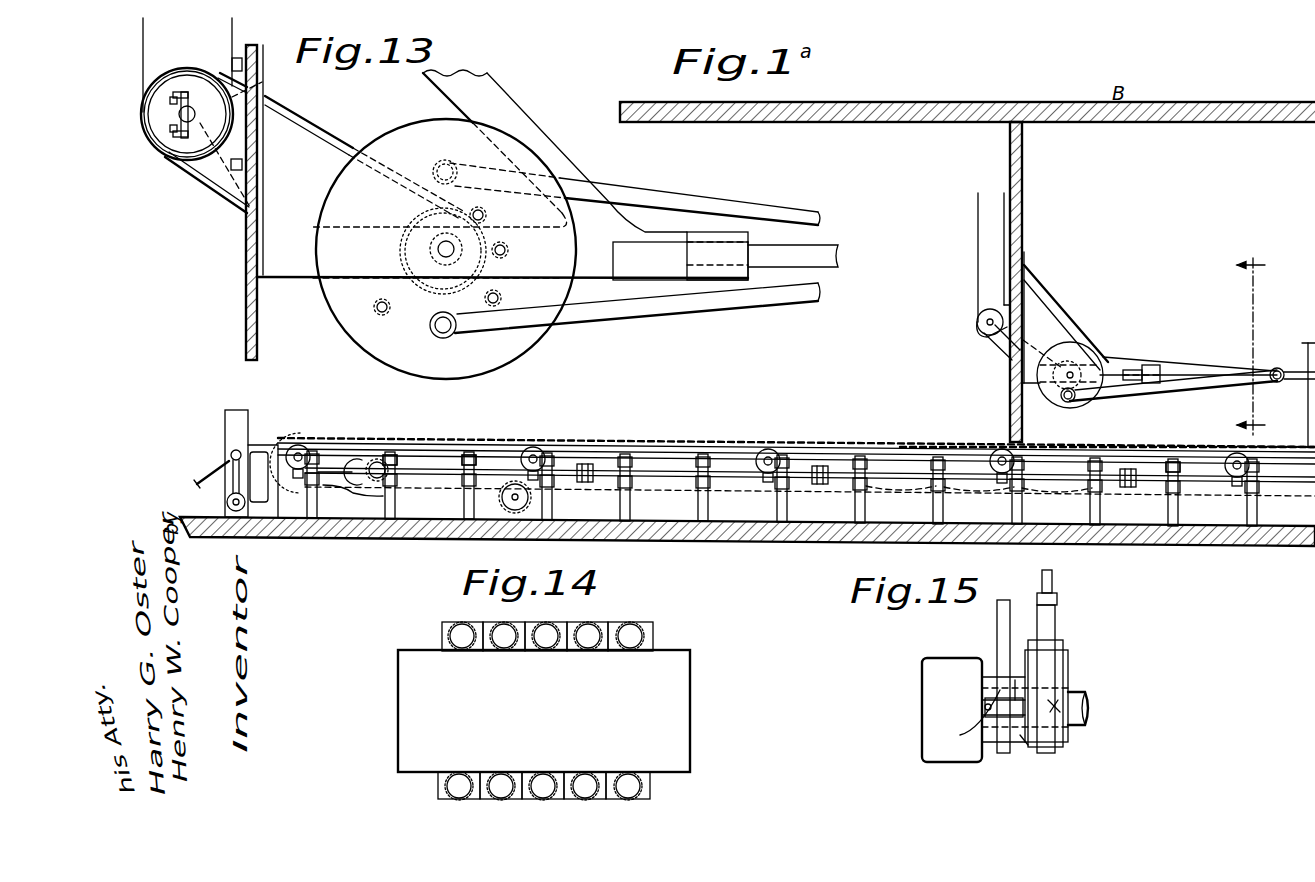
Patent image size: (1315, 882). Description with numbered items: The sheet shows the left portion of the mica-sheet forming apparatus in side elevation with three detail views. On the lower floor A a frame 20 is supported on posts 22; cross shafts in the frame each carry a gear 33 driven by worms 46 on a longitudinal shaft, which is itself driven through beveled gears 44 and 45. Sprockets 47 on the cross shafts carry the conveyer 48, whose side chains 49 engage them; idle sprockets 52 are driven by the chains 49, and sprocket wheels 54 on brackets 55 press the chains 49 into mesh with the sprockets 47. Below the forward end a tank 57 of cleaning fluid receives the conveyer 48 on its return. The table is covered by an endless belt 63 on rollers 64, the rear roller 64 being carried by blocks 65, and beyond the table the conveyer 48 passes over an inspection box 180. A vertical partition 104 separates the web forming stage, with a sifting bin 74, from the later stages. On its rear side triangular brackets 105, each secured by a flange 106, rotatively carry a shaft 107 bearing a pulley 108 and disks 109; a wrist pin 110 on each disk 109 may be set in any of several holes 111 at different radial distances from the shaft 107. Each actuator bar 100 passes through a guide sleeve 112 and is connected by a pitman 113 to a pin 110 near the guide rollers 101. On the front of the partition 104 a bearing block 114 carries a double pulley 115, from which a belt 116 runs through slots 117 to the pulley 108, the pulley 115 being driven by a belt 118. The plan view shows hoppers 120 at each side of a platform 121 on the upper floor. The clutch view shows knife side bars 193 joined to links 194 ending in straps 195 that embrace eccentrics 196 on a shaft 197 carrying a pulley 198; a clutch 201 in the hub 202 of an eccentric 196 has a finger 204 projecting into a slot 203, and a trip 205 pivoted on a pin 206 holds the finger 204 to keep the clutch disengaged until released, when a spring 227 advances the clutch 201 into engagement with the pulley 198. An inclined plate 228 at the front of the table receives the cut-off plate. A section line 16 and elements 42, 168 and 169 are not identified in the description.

In FIG. 1a, the section line 16 is at (1265, 345).
In FIG. 1a, the frame 20 is at (733, 449).
In FIG. 1a, the posts 22 is at (619, 518).
In FIG. 1a, the gear 33 is at (975, 446).
In FIG. 1a, the sprocket 42 is at (790, 457).
In FIG. 1a, the beveled gear 44 is at (380, 458).
In FIG. 1a, the beveled gear 45 is at (370, 458).
In FIG. 1a, the worms 46 is at (765, 484).
In FIG. 1a, the sprockets 47 is at (308, 448).
In FIG. 1a, the conveyer 48 is at (465, 446).
In FIG. 1a, the side chains 49 is at (830, 488).
In FIG. 1a, the idle sprockets 52 is at (540, 453).
In FIG. 1a, the sprocket wheels 54 is at (905, 491).
In FIG. 1a, the brackets 55 is at (396, 458).
In FIG. 1a, the tank 57 is at (452, 522).
In FIG. 1a, the endless belt 63 is at (1214, 490).
In FIG. 1a, the rollers 64 is at (990, 483).
In FIG. 1a, the blocks 65 is at (1068, 491).
In FIG. 1a, the sifting bin 74 is at (1305, 352).
In FIG. 13, the actuator bar 100 is at (828, 246).
In FIG. 1a, the actuator bar 100 is at (1293, 374).
In FIG. 1a, the guide rollers 101 is at (1302, 382).
In FIG. 13, the vertical partition 104 is at (243, 318).
In FIG. 1a, the vertical partition 104 is at (1023, 186).
In FIG. 13, the triangular brackets 105 is at (594, 270).
In FIG. 1a, the triangular brackets 105 is at (1073, 318).
In FIG. 13, the flange 106 is at (272, 278).
In FIG. 1a, the flange 106 is at (1027, 270).
In FIG. 13, the shaft 107 is at (438, 250).
In FIG. 1a, the shaft 107 is at (1073, 373).
In FIG. 13, the pulley 108 is at (430, 222).
In FIG. 1a, the pulley 108 is at (1083, 370).
In FIG. 13, the disks 109 is at (446, 249).
In FIG. 1a, the disks 109 is at (1056, 404).
In FIG. 13, the wrist pin 110 is at (437, 163).
In FIG. 1a, the wrist pin 110 is at (1073, 398).
In FIG. 13, the holes 111 is at (496, 294).
In FIG. 13, the guide sleeve 112 is at (735, 262).
In FIG. 1a, the guide sleeve 112 is at (1160, 367).
In FIG. 13, the pitman 113 is at (665, 184).
In FIG. 1a, the pitman 113 is at (1172, 390).
In FIG. 13, the bearing block 114 is at (200, 120).
In FIG. 1a, the bearing block 114 is at (985, 336).
In FIG. 13, the double pulley 115 is at (167, 130).
In FIG. 1a, the double pulley 115 is at (977, 323).
In FIG. 13, the belt 116 is at (332, 148).
In FIG. 1a, the belt 116 is at (1018, 360).
In FIG. 13, the slots 117 is at (268, 93).
In FIG. 13, the belt 118 is at (144, 44).
In FIG. 1a, the belt 118 is at (978, 208).
In FIG. 14, the hoppers 120 is at (503, 628).
In FIG. 14, the platform 121 is at (544, 711).
In FIG. 1a, the frame 168 is at (276, 440).
In FIG. 1a, the standard 169 is at (236, 410).
In FIG. 1a, the coverless box 180 is at (690, 466).
In FIG. 1a, the side bars 193 is at (232, 434).
In FIG. 15, the links 194 is at (1052, 581).
In FIG. 15, the straps 195 is at (1066, 646).
In FIG. 15, the eccentrics 196 is at (1069, 672).
In FIG. 15, the shaft 197 is at (1092, 706).
In FIG. 15, the pulley 198 is at (935, 684).
In FIG. 15, the clutch 201 is at (975, 714).
In FIG. 15, the hub 202 is at (985, 742).
In FIG. 15, the slot 203 is at (1022, 742).
In FIG. 15, the finger 204 is at (1015, 690).
In FIG. 15, the trip 205 is at (997, 619).
In FIG. 15, the pin 206 is at (1000, 742).
In FIG. 15, the spring 227 is at (1066, 710).
In FIG. 1a, the inclined plate 228 is at (207, 476).
In FIG. 1a, the lower floor A is at (310, 539).